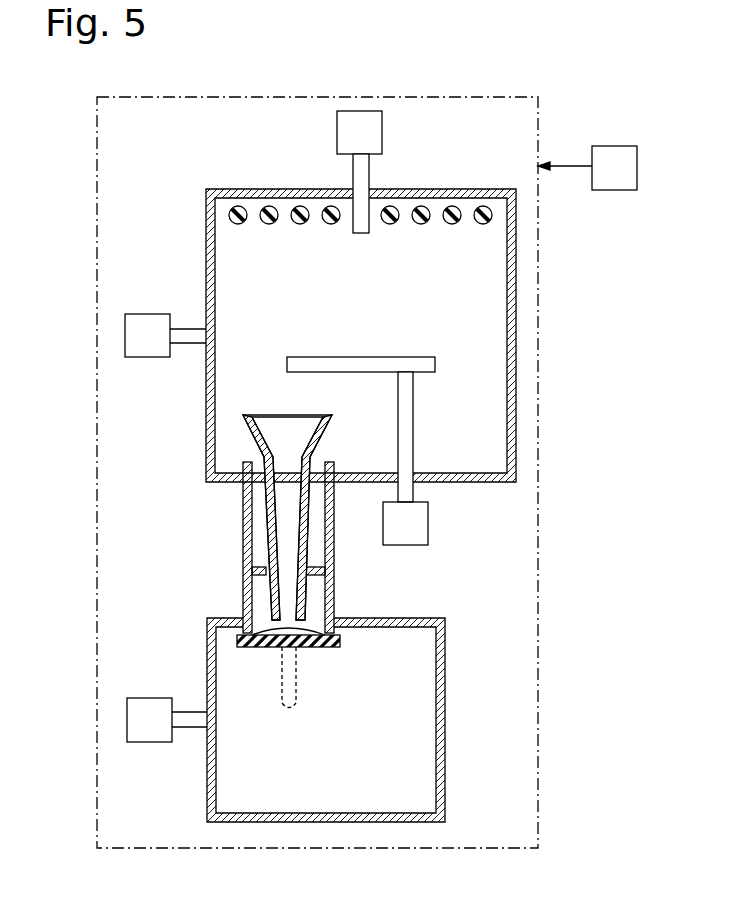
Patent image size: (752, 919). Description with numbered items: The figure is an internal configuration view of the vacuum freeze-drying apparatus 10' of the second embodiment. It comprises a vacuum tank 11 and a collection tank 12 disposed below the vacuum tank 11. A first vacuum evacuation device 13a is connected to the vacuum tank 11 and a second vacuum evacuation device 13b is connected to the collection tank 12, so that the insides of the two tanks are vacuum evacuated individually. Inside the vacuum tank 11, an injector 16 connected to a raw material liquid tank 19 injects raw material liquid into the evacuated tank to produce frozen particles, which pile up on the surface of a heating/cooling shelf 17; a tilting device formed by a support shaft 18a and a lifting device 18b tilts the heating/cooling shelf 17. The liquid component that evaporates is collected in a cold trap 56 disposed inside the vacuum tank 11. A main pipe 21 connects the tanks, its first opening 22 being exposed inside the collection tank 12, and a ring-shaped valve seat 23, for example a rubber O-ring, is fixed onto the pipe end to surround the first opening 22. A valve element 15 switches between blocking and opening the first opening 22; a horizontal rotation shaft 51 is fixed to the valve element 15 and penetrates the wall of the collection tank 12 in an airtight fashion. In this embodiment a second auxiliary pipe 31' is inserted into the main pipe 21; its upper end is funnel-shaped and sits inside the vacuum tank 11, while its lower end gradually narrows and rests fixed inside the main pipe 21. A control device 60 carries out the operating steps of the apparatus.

The vacuum freeze-drying apparatus 10' is at (317, 454).
The vacuum tank 11 is at (206, 214).
The collection tank 12 is at (207, 666).
The first vacuum evacuation device 13a is at (148, 322).
The second vacuum evacuation device 13b is at (143, 743).
The valve element 15 is at (255, 649).
The injector 16 is at (365, 236).
The heating/cooling shelf 17 is at (402, 356).
The support shaft 18a is at (413, 423).
The lifting device 18b is at (425, 525).
The raw material liquid tank 19 is at (376, 129).
The main pipe 21 is at (243, 584).
The first opening 22 is at (312, 620).
The valve seat 23 is at (237, 633).
The second auxiliary pipe 31' is at (250, 517).
The rotation shaft 51 is at (290, 712).
The cold trap 56 is at (234, 203).
The control device 60 is at (614, 190).